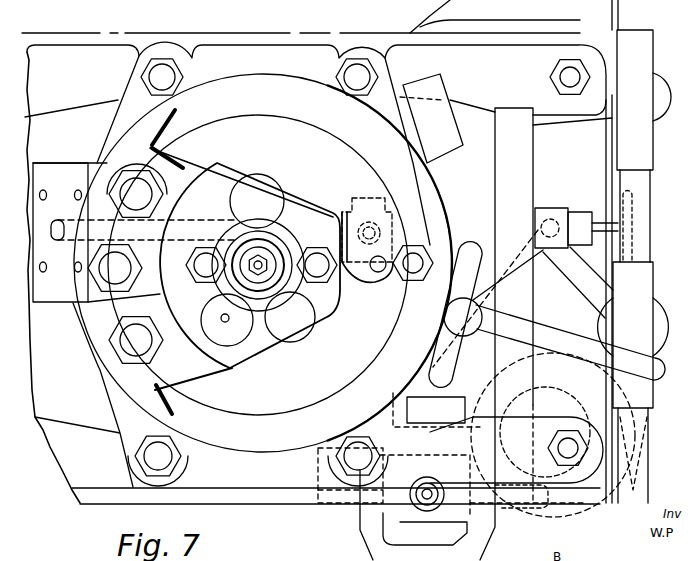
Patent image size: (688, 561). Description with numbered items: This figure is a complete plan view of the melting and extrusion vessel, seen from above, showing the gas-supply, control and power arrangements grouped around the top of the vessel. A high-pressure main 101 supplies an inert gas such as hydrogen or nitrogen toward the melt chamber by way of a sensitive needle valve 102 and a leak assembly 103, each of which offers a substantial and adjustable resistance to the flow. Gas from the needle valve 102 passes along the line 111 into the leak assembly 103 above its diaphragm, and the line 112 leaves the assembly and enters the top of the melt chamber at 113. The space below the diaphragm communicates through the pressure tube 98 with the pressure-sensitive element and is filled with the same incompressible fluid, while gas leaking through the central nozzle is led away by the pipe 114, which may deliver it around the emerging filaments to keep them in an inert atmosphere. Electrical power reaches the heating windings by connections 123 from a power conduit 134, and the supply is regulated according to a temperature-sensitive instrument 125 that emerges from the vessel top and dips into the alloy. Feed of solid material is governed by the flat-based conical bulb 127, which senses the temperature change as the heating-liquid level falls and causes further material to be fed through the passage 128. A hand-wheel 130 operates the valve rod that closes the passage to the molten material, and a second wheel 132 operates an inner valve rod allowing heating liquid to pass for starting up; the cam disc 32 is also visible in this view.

The cam disc 32 is at (213, 78).
The hand-wheel 130 is at (264, 248).
The wheel 132 is at (267, 247).
The temperature-sensitive instrument 125 is at (357, 197).
The passage 128 is at (117, 230).
The flat-based conical bulb 127 is at (221, 318).
The high-pressure main 101 is at (525, 161).
The sensitive needle valve 102 is at (558, 210).
The power conduit 134 is at (643, 204).
The connections 123 is at (595, 293).
The entry point of line into melt chamber 113 is at (480, 303).
The line 111 is at (480, 317).
The line 112 is at (547, 357).
The pressure tube 98 is at (316, 509).
The pipe 114 is at (433, 503).
The leak assembly 103 is at (527, 507).